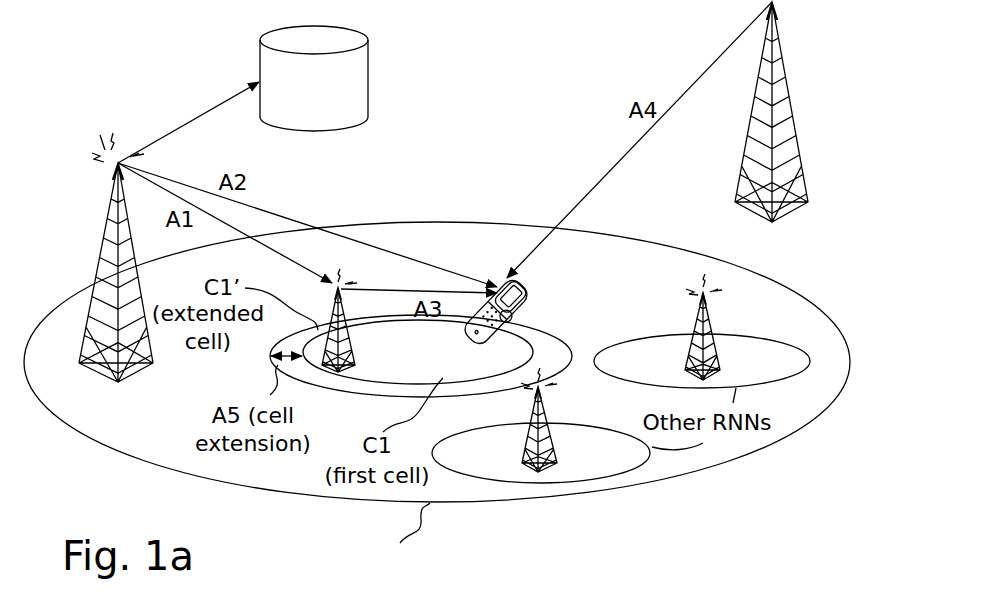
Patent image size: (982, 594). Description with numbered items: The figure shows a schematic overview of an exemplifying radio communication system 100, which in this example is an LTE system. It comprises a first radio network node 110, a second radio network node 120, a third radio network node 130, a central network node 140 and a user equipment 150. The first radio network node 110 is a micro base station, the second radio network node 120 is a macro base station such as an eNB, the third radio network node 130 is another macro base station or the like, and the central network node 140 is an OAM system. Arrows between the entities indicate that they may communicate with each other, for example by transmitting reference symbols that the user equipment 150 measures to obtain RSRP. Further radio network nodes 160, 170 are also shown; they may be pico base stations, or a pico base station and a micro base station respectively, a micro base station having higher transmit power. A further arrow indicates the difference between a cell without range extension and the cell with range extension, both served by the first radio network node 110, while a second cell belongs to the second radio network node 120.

The radio communication system 100 is at (492, 100).
The first radio network node 110 is at (384, 328).
The second radio network node 120 is at (118, 288).
The third radio network node 130 is at (725, 112).
The central network node 140 is at (314, 78).
The user equipment 150 is at (522, 311).
The further radio network node 160 is at (702, 331).
The further radio network node 170 is at (541, 425).